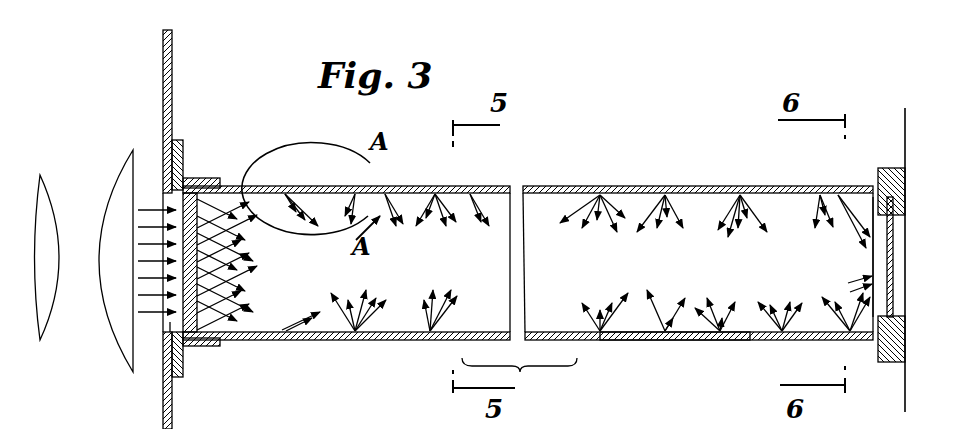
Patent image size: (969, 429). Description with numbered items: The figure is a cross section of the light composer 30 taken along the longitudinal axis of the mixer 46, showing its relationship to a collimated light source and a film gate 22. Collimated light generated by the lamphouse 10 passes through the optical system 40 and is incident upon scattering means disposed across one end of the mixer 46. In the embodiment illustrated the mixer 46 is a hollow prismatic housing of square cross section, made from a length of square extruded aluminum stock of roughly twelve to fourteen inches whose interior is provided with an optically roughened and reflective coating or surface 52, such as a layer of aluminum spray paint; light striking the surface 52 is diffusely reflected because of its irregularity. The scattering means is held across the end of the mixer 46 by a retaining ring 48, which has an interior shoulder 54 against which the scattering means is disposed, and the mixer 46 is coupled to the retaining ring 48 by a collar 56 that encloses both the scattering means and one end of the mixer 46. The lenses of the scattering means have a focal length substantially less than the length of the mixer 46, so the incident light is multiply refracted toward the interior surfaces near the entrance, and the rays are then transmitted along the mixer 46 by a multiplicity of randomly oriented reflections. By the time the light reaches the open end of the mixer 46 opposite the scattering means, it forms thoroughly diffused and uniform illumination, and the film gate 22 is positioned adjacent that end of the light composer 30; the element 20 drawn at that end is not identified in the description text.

The lamphouse 10 is at (172, 58).
The optical system 40 is at (93, 156).
The retaining ring 48 is at (183, 145).
The interior shoulder 54 is at (195, 347).
The collar 56 is at (220, 342).
The optically roughened and reflective surface 52 is at (440, 187).
The mixer 46 is at (620, 186).
The light composer 30 is at (675, 344).
The film gate 22 is at (878, 180).
The photodetector 20 is at (886, 300).